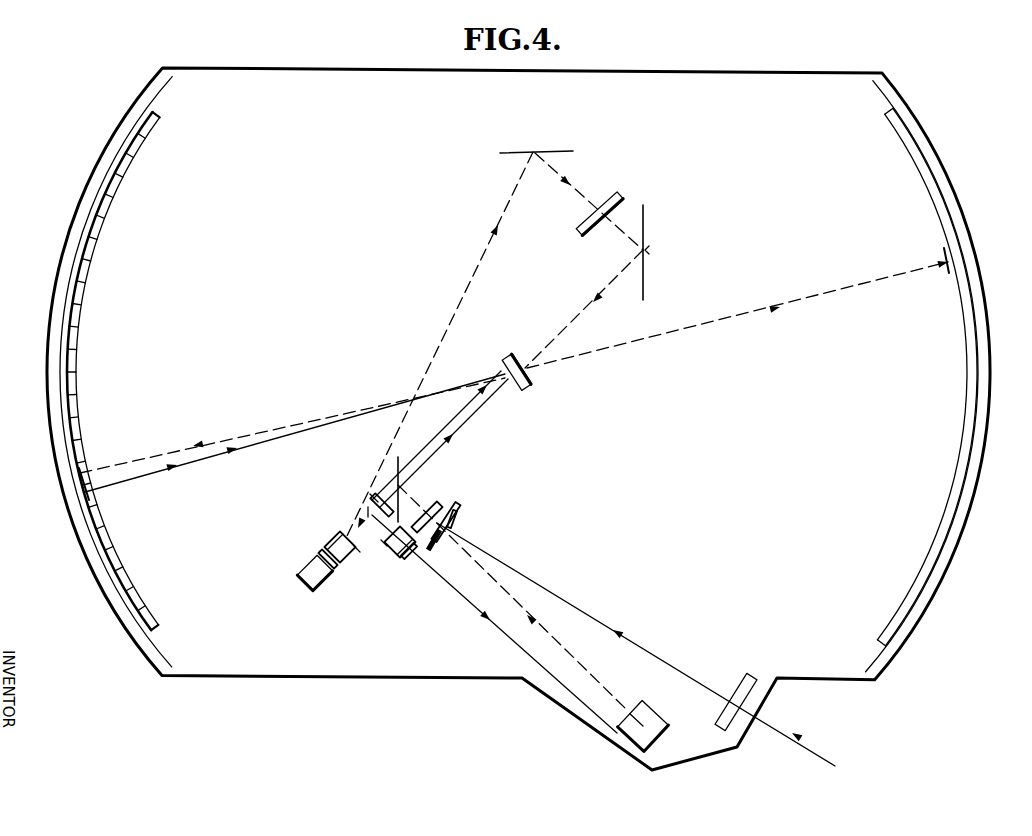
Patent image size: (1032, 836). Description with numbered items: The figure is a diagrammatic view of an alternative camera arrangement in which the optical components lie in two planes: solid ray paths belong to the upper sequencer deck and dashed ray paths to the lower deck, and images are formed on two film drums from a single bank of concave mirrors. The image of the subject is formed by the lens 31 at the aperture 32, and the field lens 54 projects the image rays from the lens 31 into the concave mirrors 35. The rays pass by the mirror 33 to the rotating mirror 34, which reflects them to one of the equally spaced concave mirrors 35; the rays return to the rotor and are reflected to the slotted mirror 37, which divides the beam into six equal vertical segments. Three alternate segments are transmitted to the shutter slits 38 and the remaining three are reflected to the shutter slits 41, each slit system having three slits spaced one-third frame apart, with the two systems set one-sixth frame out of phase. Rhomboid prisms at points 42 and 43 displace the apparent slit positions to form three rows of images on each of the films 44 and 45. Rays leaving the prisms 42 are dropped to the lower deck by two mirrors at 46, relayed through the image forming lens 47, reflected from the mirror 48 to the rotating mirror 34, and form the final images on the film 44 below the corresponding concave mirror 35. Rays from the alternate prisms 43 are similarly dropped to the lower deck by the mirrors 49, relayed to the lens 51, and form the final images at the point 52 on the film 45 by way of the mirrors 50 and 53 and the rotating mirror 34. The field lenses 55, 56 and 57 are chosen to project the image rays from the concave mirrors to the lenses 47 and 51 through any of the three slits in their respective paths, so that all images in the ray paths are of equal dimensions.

The lens 31 is at (748, 677).
The aperture 32 is at (454, 524).
The mirror 33 is at (388, 494).
The rotating mirror 34 is at (529, 386).
The concave mirror 35 is at (84, 478).
The slotted mirror 37 is at (368, 512).
The shutter slits 38 is at (360, 546).
The shutter slits 41 is at (383, 543).
The rhomboid prisms 42 is at (392, 552).
The rhomboid prisms 43 is at (335, 538).
The film 44 is at (131, 157).
The film 45 is at (901, 138).
The mirrors 46 is at (652, 718).
The image forming lens 47 is at (428, 510).
The mirror 48 is at (400, 462).
The mirrors 49 is at (305, 566).
The mirror 50 is at (531, 153).
The lens 51 is at (612, 189).
The final image point 52 is at (949, 262).
The mirror 53 is at (645, 219).
The field lens 54 is at (450, 510).
The field lens 55 is at (375, 497).
The field lens 56 is at (324, 551).
The field lens 57 is at (412, 557).